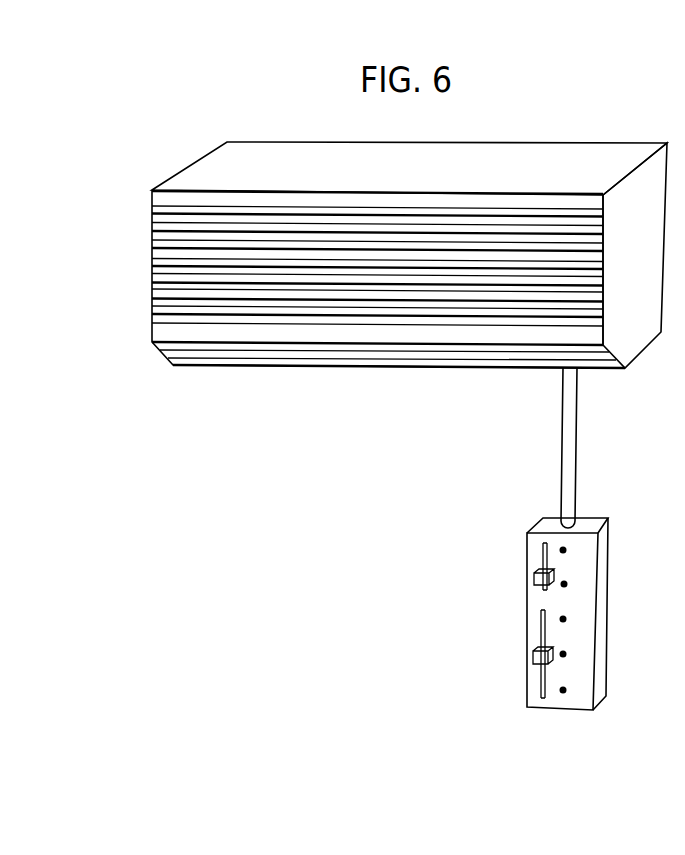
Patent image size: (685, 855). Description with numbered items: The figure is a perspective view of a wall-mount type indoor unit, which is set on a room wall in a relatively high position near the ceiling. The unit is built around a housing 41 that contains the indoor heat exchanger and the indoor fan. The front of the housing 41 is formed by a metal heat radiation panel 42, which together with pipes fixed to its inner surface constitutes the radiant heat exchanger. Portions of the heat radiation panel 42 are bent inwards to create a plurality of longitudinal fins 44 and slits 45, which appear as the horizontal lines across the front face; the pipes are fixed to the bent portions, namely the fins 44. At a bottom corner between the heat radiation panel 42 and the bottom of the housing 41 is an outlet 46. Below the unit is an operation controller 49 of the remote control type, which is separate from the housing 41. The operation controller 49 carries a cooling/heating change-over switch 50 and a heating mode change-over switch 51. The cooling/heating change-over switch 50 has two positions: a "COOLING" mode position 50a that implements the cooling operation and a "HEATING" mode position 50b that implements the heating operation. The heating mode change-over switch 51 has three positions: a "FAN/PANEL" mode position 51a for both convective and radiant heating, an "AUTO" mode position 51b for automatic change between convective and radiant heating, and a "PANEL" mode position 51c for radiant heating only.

The housing 41 is at (563, 157).
The heat radiation panel 42 is at (158, 196).
The longitudinal fins 44 is at (158, 231).
The slits 45 is at (158, 268).
The outlet 46 is at (352, 366).
The operation controller 49 is at (600, 524).
The cooling/heating change-over switch 50 is at (534, 577).
The "COOLING" mode position 50a is at (568, 550).
The "HEATING" mode position 50b is at (569, 584).
The heating mode change-over switch 51 is at (533, 655).
The "FAN/PANEL" mode position 51a is at (568, 619).
The "AUTO" mode position 51b is at (568, 654).
The "PANEL" mode position 51c is at (568, 690).